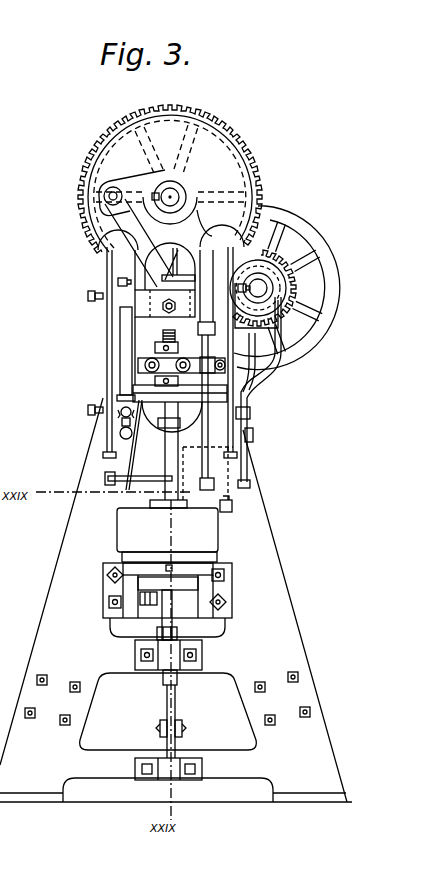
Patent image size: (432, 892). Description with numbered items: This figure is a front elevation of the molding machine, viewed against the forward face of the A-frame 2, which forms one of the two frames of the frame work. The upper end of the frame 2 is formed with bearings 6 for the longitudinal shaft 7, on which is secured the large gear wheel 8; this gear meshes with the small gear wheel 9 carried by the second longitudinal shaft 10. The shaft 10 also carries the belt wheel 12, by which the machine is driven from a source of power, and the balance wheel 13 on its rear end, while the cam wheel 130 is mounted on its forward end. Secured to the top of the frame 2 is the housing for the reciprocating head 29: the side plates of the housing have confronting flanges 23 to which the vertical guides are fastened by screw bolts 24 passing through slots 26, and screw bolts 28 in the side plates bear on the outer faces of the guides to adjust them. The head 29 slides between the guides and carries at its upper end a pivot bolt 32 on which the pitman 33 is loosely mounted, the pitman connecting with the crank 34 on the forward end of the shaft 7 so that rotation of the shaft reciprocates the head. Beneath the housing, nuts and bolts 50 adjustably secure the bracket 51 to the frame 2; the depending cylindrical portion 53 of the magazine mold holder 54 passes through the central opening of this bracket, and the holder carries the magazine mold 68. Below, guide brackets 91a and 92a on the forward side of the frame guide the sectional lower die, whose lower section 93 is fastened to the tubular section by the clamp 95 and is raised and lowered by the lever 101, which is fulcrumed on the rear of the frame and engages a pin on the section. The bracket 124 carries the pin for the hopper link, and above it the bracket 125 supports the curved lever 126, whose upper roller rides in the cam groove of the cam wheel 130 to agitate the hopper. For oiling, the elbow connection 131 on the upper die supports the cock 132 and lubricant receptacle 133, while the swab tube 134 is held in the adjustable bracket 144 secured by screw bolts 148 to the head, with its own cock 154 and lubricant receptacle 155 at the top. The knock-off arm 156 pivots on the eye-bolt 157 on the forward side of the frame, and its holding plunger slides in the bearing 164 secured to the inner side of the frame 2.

The A-frame 2 is at (282, 627).
The bearings 6 is at (187, 222).
The longitudinal shaft 7 is at (176, 200).
The large gear wheel 8 is at (243, 165).
The small gear wheel 9 is at (282, 247).
The longitudinal shaft 10 is at (303, 242).
The belt wheel 12 is at (300, 280).
The balance wheel 13 is at (323, 255).
The confronting flanges 23 is at (120, 262).
The screw bolts 24 is at (118, 282).
The slots 26 is at (117, 287).
The screw bolts 28 is at (88, 296).
The reciprocating head 29 is at (168, 302).
The pivot bolt 32 is at (163, 309).
The pitman 33 is at (110, 198).
The crank 34 is at (143, 178).
The nuts and bolts 50 is at (232, 568).
The bracket 51 is at (232, 590).
The depending cylindrical portion 53 is at (185, 587).
The magazine mold holder 54 is at (218, 558).
The magazine mold 68 is at (167, 526).
The guide bracket 91a is at (203, 655).
The guide bracket 92a is at (203, 768).
The lower die section 93 is at (167, 710).
The clamp 95 is at (160, 637).
The lever 101 is at (181, 730).
The bracket 124 is at (232, 508).
The bracket 125 is at (253, 436).
The curved lever 126 is at (237, 350).
The cam wheel 130 is at (277, 287).
The elbow connection 131 is at (125, 449).
The cock 132 is at (123, 423).
The lubricant receptacle 133 is at (125, 376).
The tube 134 is at (250, 413).
The adjustable bracket 144 is at (240, 363).
The screw bolts 148 is at (140, 364).
The cock 154 is at (259, 287).
The lubricant receptacle 155 is at (240, 222).
The knock-off arm 156 is at (137, 488).
The eye-bolt 157 is at (307, 332).
The bearing 164 is at (110, 237).